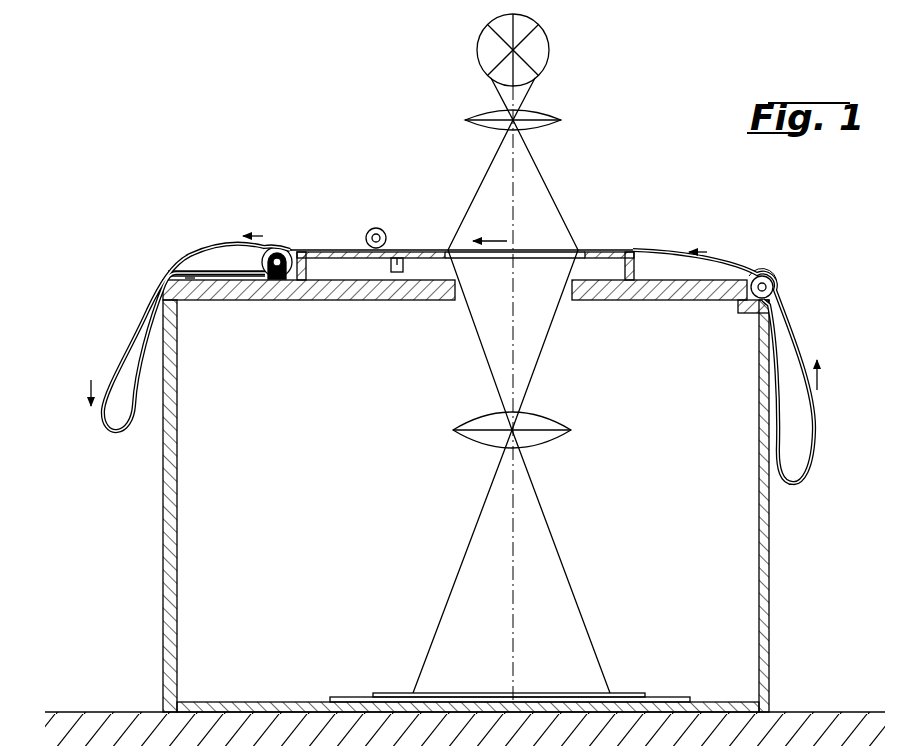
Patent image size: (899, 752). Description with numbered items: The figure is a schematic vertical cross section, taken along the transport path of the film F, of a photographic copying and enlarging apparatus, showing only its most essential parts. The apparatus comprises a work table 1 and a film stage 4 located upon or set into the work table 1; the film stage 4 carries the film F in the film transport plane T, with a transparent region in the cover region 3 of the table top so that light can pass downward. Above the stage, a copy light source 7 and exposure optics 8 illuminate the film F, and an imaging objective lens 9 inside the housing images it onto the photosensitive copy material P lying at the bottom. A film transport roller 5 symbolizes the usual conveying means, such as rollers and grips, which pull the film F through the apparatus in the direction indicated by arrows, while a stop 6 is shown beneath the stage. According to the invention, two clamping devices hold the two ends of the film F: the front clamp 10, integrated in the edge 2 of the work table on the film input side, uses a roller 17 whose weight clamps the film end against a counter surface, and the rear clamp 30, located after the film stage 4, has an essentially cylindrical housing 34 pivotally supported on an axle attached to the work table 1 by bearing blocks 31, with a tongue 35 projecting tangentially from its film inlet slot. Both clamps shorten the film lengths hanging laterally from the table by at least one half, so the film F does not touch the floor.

The work table 1 is at (652, 286).
The edge of the work table 2 is at (777, 282).
The cover plate 3 is at (713, 282).
The film stage 4 is at (343, 252).
The film transport roller 5 is at (379, 228).
The stop block 6 is at (398, 273).
The copy light source 7 is at (547, 52).
The exposure optics 8 is at (536, 117).
The imaging objective lens 9 is at (540, 422).
The front clamp 10 is at (780, 262).
The roller 17 is at (776, 290).
The rear clamp 30 is at (288, 234).
The bearing blocks 31 is at (280, 272).
The housing 34 is at (277, 246).
The tongue 35 is at (214, 279).
The film F is at (110, 356).
The film transport plane T is at (606, 252).
The photosensitive copy material P is at (630, 693).